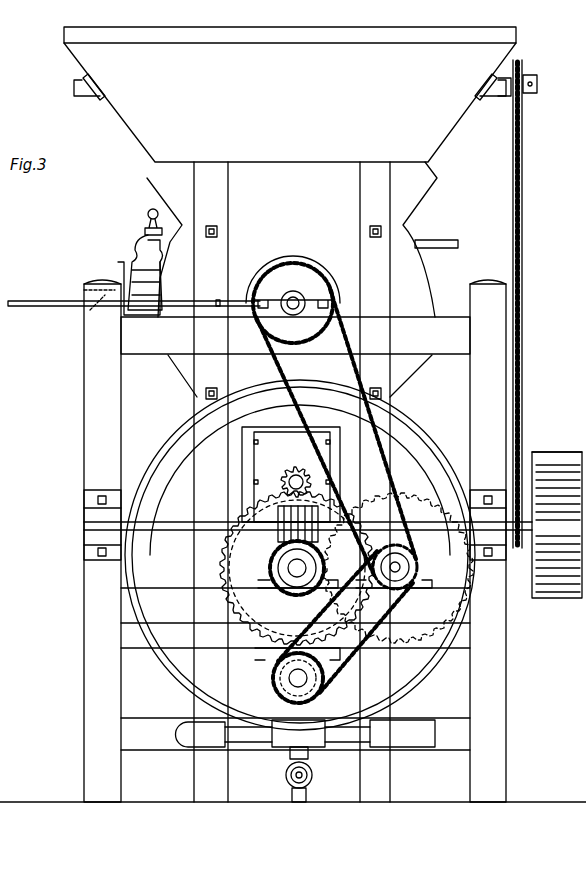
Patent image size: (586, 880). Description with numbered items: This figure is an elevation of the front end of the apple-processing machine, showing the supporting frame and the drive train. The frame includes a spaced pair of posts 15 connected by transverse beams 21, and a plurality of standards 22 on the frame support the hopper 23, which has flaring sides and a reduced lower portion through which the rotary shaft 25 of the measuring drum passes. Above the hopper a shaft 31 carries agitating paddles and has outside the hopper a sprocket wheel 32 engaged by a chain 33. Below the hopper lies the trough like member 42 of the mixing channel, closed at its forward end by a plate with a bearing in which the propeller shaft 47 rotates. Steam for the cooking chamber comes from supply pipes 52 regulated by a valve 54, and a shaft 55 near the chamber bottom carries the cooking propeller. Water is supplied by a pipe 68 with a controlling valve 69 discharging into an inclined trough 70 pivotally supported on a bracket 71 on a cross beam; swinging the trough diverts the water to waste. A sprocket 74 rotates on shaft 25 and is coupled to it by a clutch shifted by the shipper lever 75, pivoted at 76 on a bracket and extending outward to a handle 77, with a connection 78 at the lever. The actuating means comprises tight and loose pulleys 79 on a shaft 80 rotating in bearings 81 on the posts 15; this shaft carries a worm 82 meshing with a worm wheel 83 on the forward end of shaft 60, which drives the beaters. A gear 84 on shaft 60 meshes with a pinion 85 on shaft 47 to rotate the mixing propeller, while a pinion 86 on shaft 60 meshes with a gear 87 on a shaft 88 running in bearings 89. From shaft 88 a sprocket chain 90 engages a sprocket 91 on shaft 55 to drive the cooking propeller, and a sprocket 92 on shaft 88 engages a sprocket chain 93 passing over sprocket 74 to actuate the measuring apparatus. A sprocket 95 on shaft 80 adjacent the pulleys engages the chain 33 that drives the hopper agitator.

The posts 15 is at (100, 358).
The transverse beams 21 is at (448, 776).
The standards 22 is at (220, 198).
The hopper 23 is at (450, 138).
The rotary shaft 25 is at (296, 300).
The shaft 31 is at (500, 96).
The sprocket wheel 32 is at (528, 72).
The chain 33 is at (522, 210).
The trough like member 42 is at (244, 476).
The shaft 47 is at (290, 474).
The supply pipes 52 is at (436, 740).
The valve 54 is at (314, 776).
The shaft 55 is at (292, 678).
The shaft 60 is at (272, 580).
The pipe 68 is at (442, 240).
The controlling valve 69 is at (146, 232).
The inclined trough 70 is at (128, 272).
The bracket 71 is at (150, 292).
The sprocket 74 is at (312, 360).
The shipper lever 75 is at (250, 290).
The pivot 76 is at (218, 300).
The handle 77 is at (68, 306).
The link 78 is at (80, 294).
The tight and loose pulleys 79 is at (574, 452).
The shaft 80 is at (430, 532).
The bearings 81 is at (92, 515).
The worm 82 is at (278, 540).
The worm wheel 83 is at (275, 570).
The gear 84 is at (262, 556).
The pinion 85 is at (291, 474).
The pinion 86 is at (290, 594).
The gear 87 is at (455, 620).
The shaft 88 is at (410, 567).
The bearings 89 is at (432, 584).
The sprocket chain 90 is at (315, 675).
The sprocket 91 is at (322, 680).
The sprocket 92 is at (392, 540).
The sprocket chain 93 is at (280, 380).
The sprocket 95 is at (526, 548).